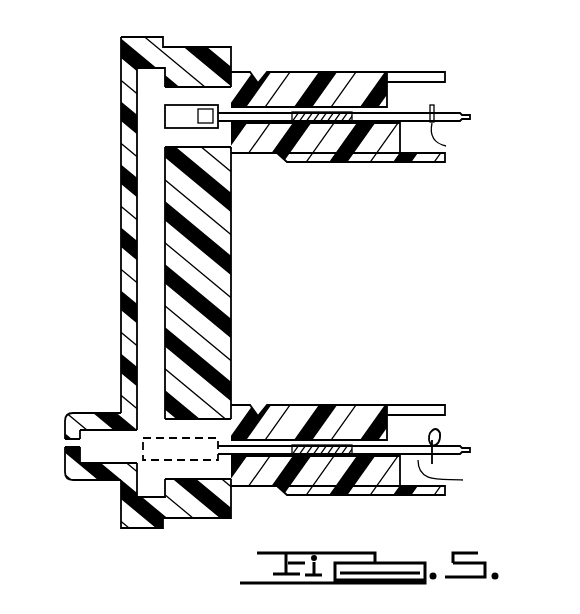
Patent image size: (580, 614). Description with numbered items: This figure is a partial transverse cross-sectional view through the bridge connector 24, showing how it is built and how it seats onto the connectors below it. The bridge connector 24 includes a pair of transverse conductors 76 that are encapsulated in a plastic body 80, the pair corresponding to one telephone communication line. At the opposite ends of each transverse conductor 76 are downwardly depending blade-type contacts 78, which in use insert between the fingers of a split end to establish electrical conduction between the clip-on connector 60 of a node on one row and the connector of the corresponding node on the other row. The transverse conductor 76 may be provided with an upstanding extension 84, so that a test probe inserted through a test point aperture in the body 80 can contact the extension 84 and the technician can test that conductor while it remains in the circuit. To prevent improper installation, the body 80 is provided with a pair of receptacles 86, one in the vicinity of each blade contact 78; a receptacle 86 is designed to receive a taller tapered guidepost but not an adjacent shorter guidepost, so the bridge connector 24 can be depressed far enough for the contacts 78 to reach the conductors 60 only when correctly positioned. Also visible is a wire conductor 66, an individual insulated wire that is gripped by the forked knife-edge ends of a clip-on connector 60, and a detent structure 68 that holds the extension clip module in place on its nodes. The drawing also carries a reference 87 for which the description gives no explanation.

The bridge connector 24 is at (123, 194).
The transverse conductor 76 is at (150, 232).
The blade-type contact 78 is at (193, 128).
The plastic body 80 is at (203, 290).
The receptacle 86 is at (205, 100).
The upstanding extension 84 is at (93, 432).
The slot 87 is at (65, 445).
The detent structure 68 is at (413, 405).
The wire conductor 66 is at (440, 432).
The clip-on connector 60 is at (454, 488).